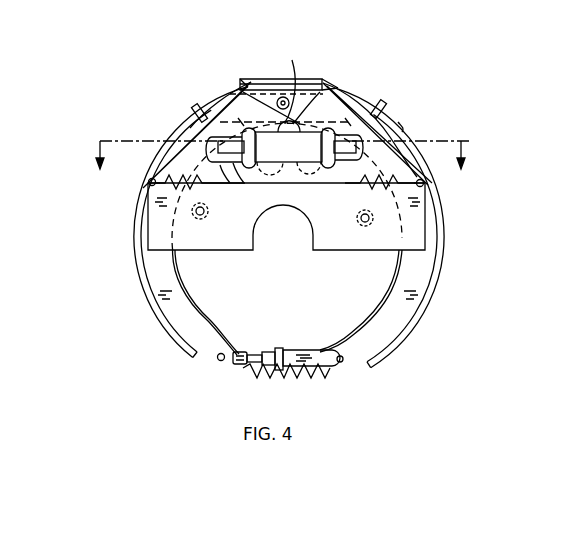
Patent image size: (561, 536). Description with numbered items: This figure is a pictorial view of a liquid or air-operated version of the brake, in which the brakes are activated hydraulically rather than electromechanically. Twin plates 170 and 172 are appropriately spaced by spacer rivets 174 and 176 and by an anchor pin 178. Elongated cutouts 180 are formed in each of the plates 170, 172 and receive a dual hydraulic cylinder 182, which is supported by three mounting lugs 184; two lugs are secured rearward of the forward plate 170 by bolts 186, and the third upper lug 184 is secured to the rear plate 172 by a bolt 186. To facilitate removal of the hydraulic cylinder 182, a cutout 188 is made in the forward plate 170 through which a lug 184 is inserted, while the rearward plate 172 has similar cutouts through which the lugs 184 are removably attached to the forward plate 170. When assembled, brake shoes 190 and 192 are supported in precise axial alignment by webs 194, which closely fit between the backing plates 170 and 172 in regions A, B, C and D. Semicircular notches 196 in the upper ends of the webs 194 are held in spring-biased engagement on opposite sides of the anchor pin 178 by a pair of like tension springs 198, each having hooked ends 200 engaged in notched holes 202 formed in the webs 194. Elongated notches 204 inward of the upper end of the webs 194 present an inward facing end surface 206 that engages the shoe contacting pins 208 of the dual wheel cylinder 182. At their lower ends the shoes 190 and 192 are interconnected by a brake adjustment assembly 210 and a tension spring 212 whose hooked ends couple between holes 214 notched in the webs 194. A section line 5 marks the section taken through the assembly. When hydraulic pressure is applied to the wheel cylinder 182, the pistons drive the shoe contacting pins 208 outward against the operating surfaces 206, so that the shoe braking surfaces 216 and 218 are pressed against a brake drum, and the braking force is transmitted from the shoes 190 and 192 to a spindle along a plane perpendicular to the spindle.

The forward plate 170 is at (217, 99).
The rear plate 172 is at (318, 80).
The spacer rivet 174 is at (202, 216).
The spacer rivet 176 is at (363, 222).
The anchor pin 178 is at (260, 104).
The elongated cutout 180 is at (259, 167).
The dual hydraulic cylinder 182 is at (305, 156).
The mounting lug 184 is at (287, 90).
The bolt 186 is at (382, 110).
The cutout 188 is at (345, 89).
The brake shoe 190 is at (136, 266).
The brake shoe 192 is at (440, 266).
The web 194 is at (195, 316).
The semicircular notch 196 is at (286, 108).
The tension spring 198 is at (272, 207).
The hooked end 200 is at (428, 196).
The notched hole 202 is at (141, 187).
The elongated notch 204 is at (176, 125).
The inward facing end surface 206 is at (252, 178).
The shoe contacting pin 208 is at (357, 178).
The brake adjustment assembly 210 is at (312, 333).
The tension spring 212 is at (292, 378).
The hole 214 is at (222, 361).
The shoe braking surface 216 is at (194, 108).
The shoe braking surface 218 is at (408, 127).
The section line 5- 5 is at (282, 168).
The region A is at (148, 212).
The region B is at (247, 86).
The region C is at (335, 86).
The region D is at (428, 238).